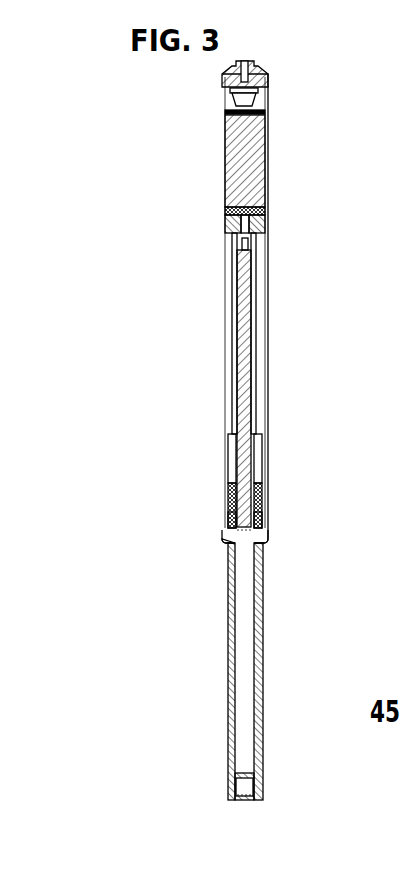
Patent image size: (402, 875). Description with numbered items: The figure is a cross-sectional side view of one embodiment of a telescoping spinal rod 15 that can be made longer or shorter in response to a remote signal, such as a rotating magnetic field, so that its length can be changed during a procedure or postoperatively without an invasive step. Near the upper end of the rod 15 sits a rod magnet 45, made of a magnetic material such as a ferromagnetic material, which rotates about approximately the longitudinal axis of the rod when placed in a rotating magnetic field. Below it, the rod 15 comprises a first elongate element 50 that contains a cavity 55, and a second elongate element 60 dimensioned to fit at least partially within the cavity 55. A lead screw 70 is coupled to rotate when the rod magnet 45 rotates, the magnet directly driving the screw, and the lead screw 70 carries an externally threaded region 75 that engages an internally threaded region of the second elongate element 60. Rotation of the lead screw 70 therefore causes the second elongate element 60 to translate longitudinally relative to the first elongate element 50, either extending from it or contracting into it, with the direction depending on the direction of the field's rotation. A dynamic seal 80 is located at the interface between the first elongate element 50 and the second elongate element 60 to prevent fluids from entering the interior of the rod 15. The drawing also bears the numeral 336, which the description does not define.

The telescoping spinal rod 15 is at (140, 197).
The rod magnet 45 is at (247, 157).
The first elongate element 50 is at (224, 347).
The cavity 55 is at (258, 335).
The second elongate element 60 is at (263, 661).
The lead screw 70 is at (247, 380).
The externally threaded region 75 is at (258, 497).
The dynamic seal 80 is at (264, 539).
The retention element 336 is at (256, 518).